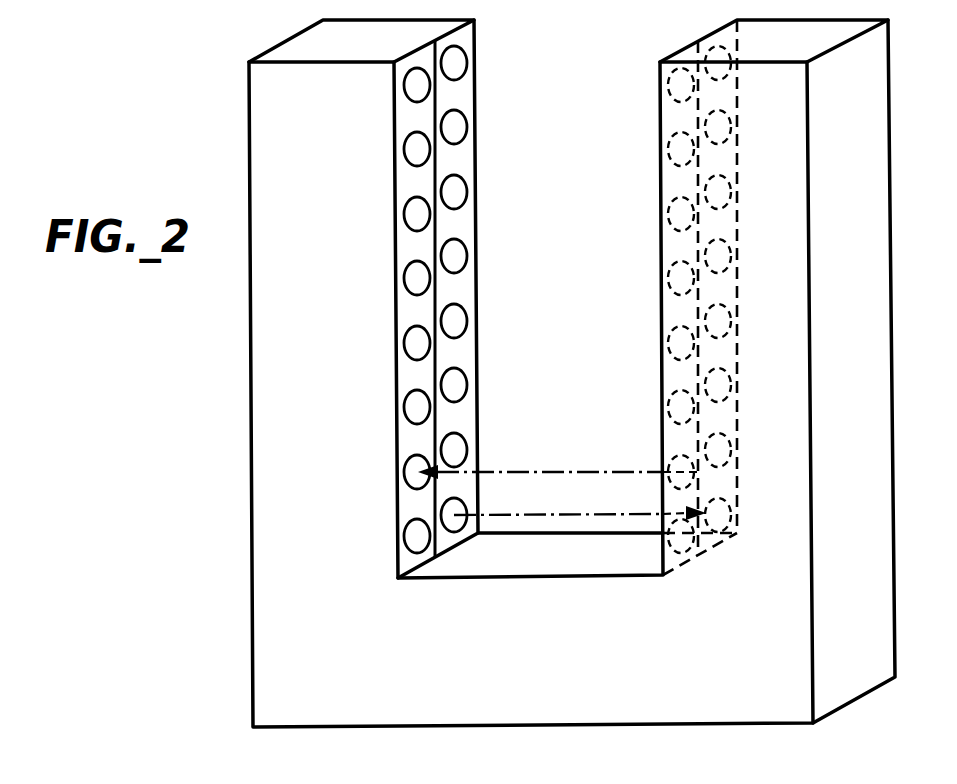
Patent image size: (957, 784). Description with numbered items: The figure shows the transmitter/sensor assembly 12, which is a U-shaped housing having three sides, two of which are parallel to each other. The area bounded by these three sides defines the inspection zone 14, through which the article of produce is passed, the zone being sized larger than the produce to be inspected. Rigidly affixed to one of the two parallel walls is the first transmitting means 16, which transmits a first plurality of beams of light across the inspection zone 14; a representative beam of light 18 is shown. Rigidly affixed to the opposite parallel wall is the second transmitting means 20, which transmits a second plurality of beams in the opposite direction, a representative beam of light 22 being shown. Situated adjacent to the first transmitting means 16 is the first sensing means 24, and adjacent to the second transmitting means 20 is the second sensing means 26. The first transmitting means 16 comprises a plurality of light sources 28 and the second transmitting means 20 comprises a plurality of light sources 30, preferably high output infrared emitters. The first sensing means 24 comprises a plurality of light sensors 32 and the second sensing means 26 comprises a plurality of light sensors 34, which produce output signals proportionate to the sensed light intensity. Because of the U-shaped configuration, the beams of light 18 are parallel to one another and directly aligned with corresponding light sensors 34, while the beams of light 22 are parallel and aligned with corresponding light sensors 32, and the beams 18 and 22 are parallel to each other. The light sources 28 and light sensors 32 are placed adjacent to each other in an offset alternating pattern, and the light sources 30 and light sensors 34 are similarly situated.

The transmitter/sensor assembly 12 is at (292, 728).
The inspection zone 14 is at (512, 413).
The first transmitting means 16 is at (658, 116).
The beam of light 18 is at (535, 472).
The second transmitting means 20 is at (458, 93).
The beam of light 22 is at (513, 515).
The first sensing means 24 is at (746, 295).
The second sensing means 26 is at (390, 378).
The light sources 28 is at (705, 470).
The light sources 30 is at (453, 514).
The light sensors 32 is at (712, 514).
The light sensors 34 is at (404, 476).